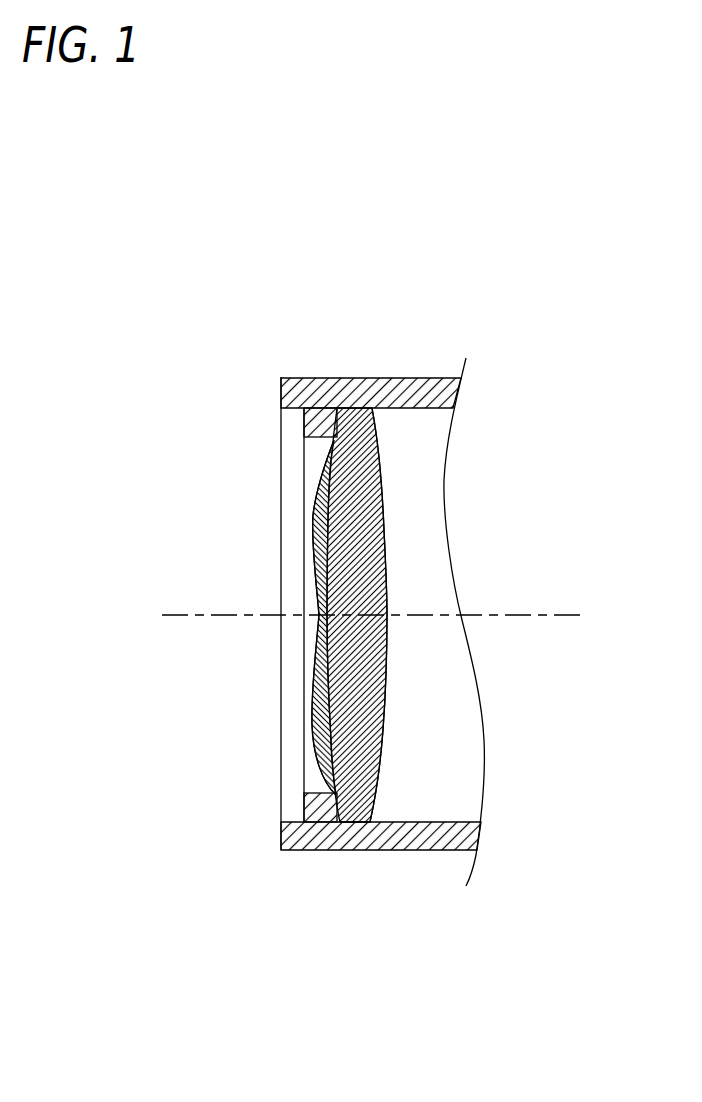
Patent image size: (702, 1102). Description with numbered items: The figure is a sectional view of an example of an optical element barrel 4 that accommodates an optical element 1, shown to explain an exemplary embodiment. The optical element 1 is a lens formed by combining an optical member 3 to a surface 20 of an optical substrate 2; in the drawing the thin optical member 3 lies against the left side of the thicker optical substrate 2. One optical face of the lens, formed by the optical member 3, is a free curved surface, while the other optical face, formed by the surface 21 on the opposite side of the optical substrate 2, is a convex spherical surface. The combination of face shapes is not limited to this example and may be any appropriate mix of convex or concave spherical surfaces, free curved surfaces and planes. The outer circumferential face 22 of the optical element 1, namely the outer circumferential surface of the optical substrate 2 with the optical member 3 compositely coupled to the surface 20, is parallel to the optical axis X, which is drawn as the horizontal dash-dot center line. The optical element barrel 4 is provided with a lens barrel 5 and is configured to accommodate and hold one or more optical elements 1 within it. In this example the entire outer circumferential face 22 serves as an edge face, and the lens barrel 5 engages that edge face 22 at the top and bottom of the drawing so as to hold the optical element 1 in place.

The optical element 1 is at (346, 576).
The optical substrate 2 is at (376, 606).
The optical member 3 is at (300, 606).
The optical element barrel 4 is at (344, 558).
The lens barrel 5 is at (415, 383).
The surface 20 is at (317, 740).
The surface 21 is at (383, 742).
The outer circumferential face 22 is at (350, 822).
The optical axis X is at (566, 608).